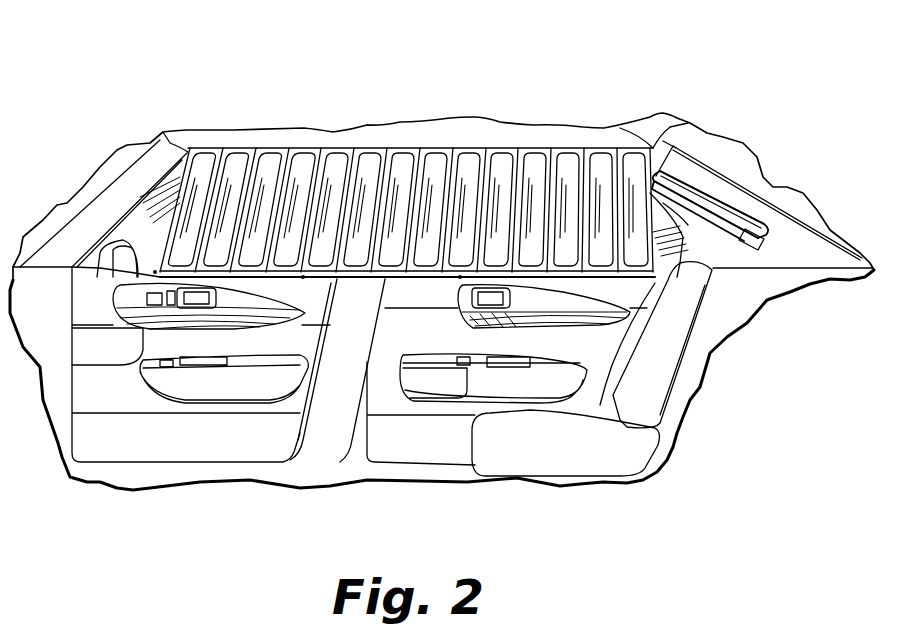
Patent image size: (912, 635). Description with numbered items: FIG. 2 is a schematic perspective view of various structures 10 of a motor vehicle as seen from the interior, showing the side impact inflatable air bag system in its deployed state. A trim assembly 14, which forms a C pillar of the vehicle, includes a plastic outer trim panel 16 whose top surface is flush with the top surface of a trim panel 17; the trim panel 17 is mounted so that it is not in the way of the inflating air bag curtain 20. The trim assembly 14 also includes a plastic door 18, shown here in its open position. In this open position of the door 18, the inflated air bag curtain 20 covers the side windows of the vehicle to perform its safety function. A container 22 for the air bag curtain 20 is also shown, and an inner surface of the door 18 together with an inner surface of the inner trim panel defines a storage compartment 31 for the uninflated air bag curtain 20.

The structures 10 is at (566, 98).
The trim assembly 14 is at (736, 170).
The outer trim panel 16 is at (775, 202).
The trim panel 17 is at (640, 143).
The door 18 is at (684, 160).
The air bag curtain 20 is at (387, 147).
The container 22 is at (720, 228).
The storage compartment 31 is at (758, 243).